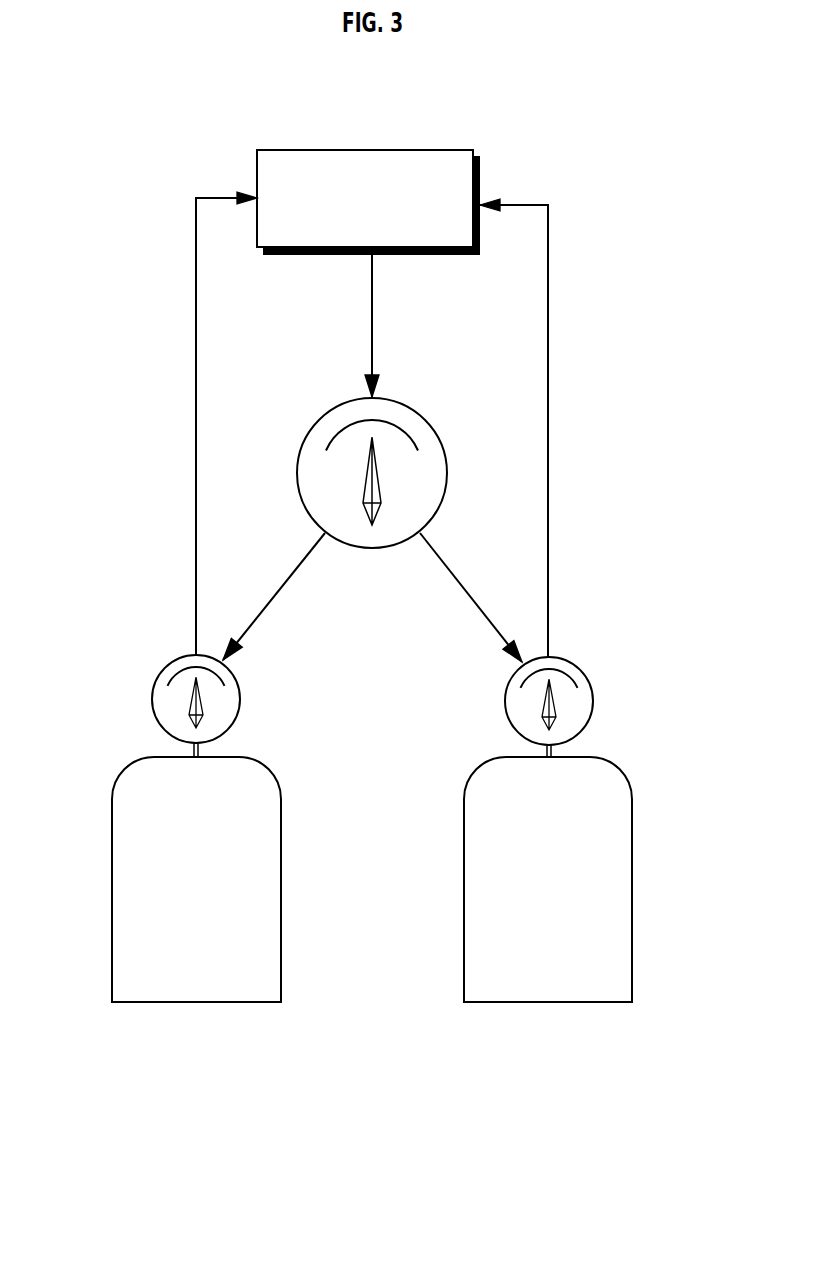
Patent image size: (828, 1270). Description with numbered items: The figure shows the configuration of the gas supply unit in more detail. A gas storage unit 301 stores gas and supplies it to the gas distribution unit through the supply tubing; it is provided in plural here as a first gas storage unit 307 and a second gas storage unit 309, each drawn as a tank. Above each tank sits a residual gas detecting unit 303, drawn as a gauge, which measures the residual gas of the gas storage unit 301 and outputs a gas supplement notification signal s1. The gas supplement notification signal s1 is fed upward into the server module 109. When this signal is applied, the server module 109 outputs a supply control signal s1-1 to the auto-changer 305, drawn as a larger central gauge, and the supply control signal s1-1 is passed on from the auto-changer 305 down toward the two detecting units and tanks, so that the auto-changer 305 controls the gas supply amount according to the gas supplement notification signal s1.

The server module 109 is at (437, 163).
The gas storage unit 301 is at (372, 943).
The residual gas detecting unit 303 is at (157, 698).
The auto-changer 305 is at (410, 422).
The first gas storage unit 307 is at (257, 988).
The second gas storage unit 309 is at (525, 918).
The gas supplement notification signal s1 is at (359, 424).
The supply control signal s1-1 is at (372, 458).